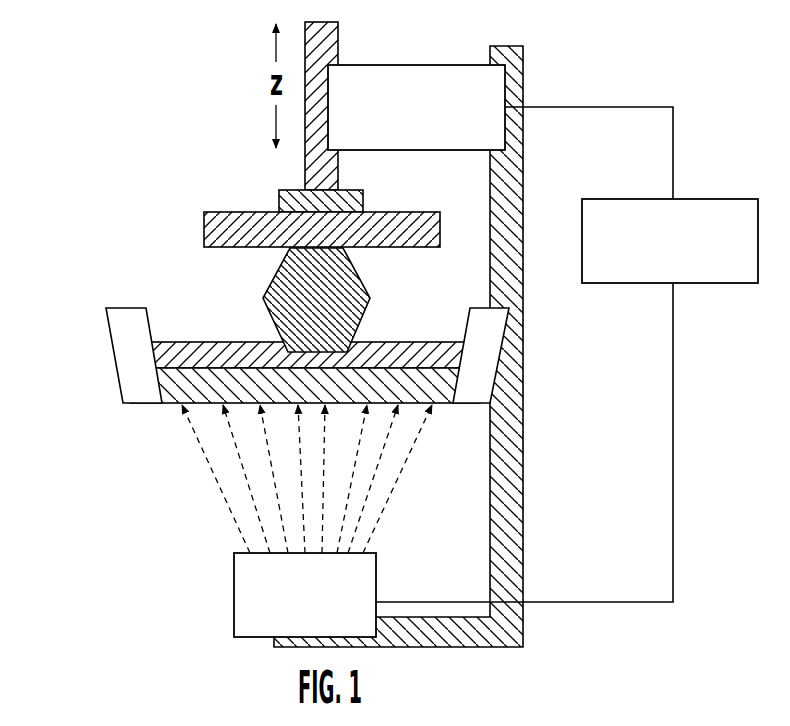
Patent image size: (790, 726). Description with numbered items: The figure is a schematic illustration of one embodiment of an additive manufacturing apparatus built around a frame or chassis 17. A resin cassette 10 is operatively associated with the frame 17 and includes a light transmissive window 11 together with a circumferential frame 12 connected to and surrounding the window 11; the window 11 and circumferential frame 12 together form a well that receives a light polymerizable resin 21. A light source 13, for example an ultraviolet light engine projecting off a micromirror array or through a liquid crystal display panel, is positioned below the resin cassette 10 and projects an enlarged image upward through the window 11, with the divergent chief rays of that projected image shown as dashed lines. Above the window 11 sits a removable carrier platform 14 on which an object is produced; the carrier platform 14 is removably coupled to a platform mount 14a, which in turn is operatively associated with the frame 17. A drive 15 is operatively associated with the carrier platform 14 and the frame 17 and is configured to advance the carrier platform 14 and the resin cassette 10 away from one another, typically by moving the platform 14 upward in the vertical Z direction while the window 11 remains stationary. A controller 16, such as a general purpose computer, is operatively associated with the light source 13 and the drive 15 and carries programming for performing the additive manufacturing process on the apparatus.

The resin cassette 10 is at (96, 336).
The window 11 is at (195, 391).
The circumferential frame 12 is at (138, 370).
The light source 13 is at (307, 521).
The carrier platform 14 is at (227, 233).
The platform mount 14a is at (285, 196).
The drive 15 is at (416, 107).
The controller 16 is at (567, 354).
The frame 17 is at (517, 415).
The light polymerizable resin 21 is at (403, 341).